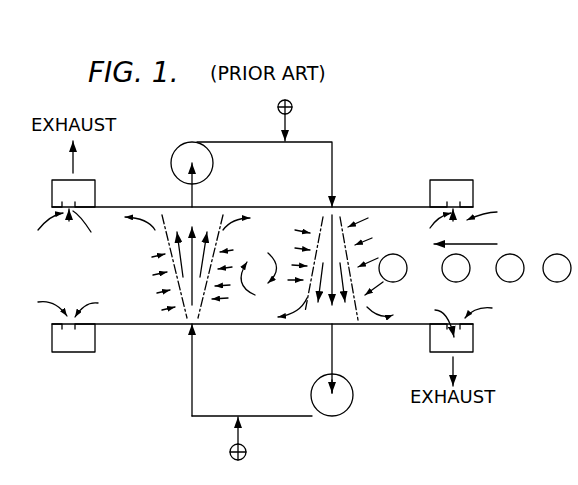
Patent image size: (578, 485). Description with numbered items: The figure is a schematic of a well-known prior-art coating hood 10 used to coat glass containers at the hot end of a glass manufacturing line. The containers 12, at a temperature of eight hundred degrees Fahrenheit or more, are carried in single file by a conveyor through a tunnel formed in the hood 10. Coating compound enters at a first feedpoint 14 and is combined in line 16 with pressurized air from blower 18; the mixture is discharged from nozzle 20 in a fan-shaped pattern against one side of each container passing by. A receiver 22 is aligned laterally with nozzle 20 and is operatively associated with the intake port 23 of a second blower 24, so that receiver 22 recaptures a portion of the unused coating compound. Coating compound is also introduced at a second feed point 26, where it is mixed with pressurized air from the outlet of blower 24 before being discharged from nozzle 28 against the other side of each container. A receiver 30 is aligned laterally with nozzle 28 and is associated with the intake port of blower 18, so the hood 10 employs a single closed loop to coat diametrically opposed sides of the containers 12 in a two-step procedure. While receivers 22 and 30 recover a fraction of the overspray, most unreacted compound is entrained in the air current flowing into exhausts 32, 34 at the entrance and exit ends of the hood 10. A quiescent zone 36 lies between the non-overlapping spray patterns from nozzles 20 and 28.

The coating hood 10 is at (164, 359).
The containers 12 is at (548, 256).
The first feedpoint 14 is at (293, 103).
The line 16 is at (334, 157).
The blower 18 is at (213, 167).
The nozzle 20 is at (338, 206).
The receiver 22 is at (334, 327).
The intake port 23 is at (333, 392).
The second blower 24 is at (349, 402).
The second feed point 26 is at (247, 445).
The nozzle 28 is at (196, 326).
The receiver 30 is at (195, 206).
The exhaust 32 is at (474, 340).
The exhaust 34 is at (95, 198).
The quiescent zone 36 is at (277, 244).